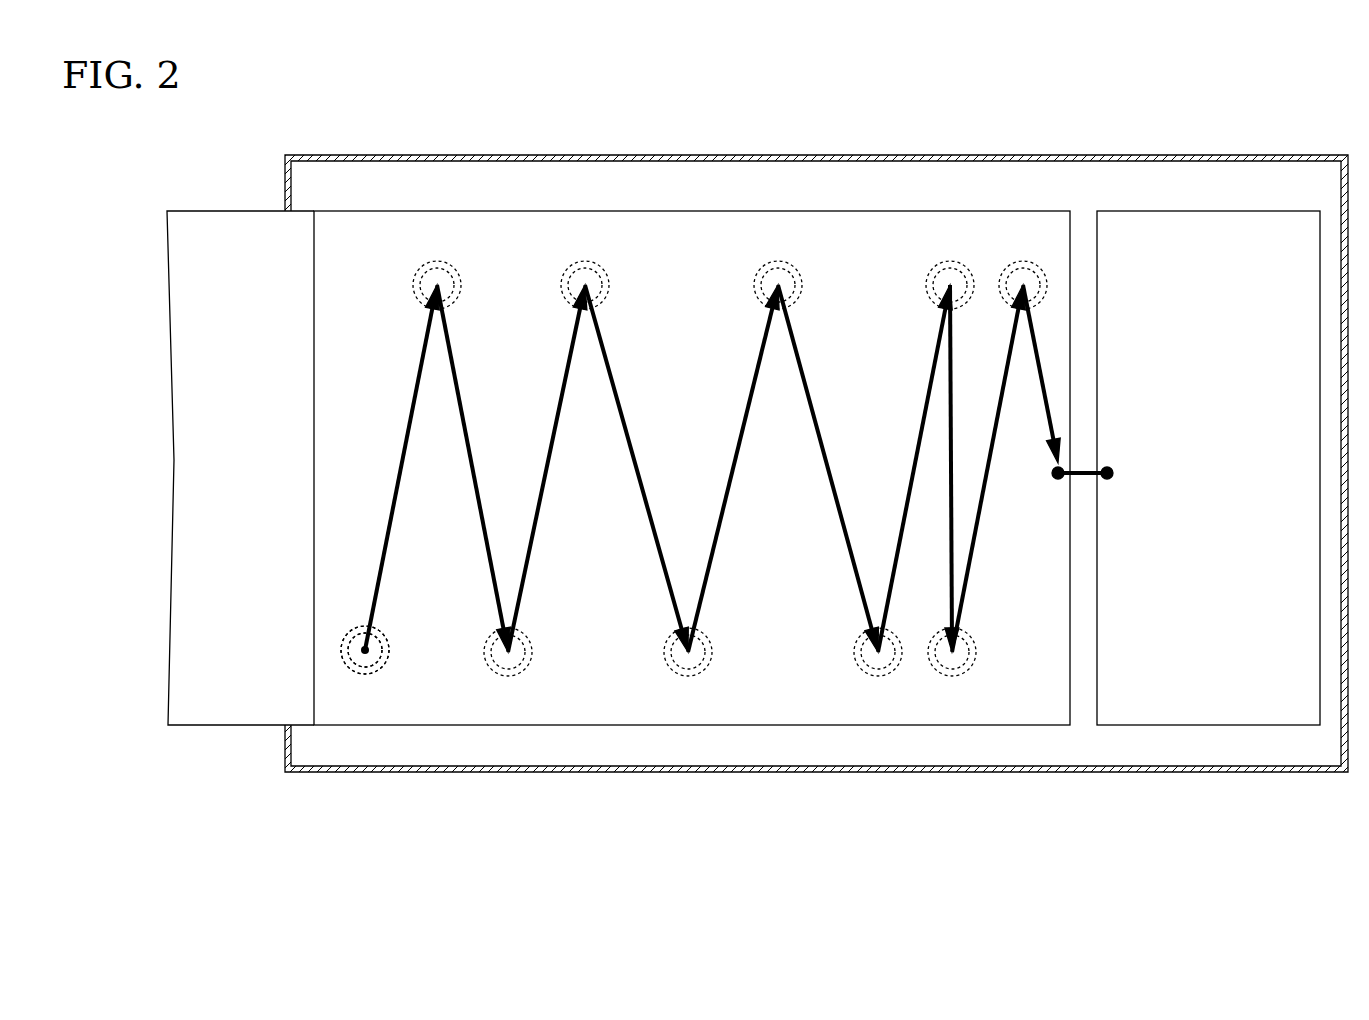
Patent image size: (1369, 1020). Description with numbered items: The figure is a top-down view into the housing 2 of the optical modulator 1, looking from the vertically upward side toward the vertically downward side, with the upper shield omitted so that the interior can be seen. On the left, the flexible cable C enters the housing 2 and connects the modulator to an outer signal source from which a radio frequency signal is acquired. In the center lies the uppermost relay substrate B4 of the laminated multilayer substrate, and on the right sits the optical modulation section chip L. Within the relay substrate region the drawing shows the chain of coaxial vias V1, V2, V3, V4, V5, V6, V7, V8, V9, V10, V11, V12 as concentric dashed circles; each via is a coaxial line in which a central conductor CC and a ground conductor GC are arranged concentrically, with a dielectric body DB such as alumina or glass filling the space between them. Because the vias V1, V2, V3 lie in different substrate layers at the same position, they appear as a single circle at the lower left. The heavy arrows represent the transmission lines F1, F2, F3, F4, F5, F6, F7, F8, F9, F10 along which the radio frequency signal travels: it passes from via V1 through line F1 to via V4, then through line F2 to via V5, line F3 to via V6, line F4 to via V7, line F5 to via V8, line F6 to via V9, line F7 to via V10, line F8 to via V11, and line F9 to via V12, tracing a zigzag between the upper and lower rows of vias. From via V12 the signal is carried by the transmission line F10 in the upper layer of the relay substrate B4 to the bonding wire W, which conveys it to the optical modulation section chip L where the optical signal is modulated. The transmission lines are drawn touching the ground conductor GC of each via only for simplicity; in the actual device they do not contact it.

The optical modulator 1 is at (905, 110).
The housing 2 is at (583, 160).
The relay substrate B4 is at (405, 232).
The optical modulation section chip L is at (1247, 212).
The flexible cable C is at (230, 715).
The bonding wire W is at (1088, 468).
The ground conductor GC is at (383, 636).
The central conductor CC is at (378, 674).
The dielectric body DB is at (360, 672).
The via V1 is at (450, 668).
The via V2 is at (450, 668).
The via V3 is at (372, 653).
The via V4 is at (413, 286).
The via V5 is at (533, 652).
The via V6 is at (561, 286).
The via V7 is at (713, 652).
The via V8 is at (754, 286).
The via V9 is at (900, 652).
The via V10 is at (926, 286).
The via V11 is at (975, 652).
The via V12 is at (1023, 261).
The transmission line F1 is at (414, 412).
The transmission line F2 is at (452, 355).
The transmission line F3 is at (558, 412).
The transmission line F4 is at (605, 355).
The transmission line F5 is at (748, 412).
The transmission line F6 is at (800, 355).
The transmission line F7 is at (926, 412).
The transmission line F8 is at (955, 380).
The transmission line F9 is at (975, 568).
The transmission line F10 is at (1040, 374).